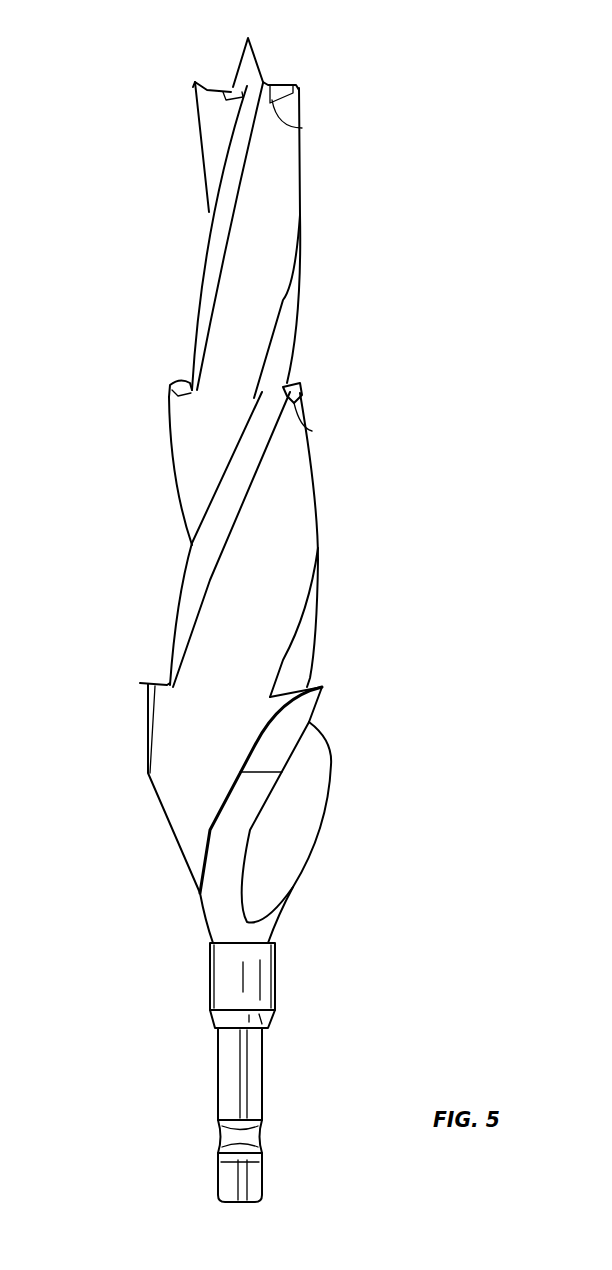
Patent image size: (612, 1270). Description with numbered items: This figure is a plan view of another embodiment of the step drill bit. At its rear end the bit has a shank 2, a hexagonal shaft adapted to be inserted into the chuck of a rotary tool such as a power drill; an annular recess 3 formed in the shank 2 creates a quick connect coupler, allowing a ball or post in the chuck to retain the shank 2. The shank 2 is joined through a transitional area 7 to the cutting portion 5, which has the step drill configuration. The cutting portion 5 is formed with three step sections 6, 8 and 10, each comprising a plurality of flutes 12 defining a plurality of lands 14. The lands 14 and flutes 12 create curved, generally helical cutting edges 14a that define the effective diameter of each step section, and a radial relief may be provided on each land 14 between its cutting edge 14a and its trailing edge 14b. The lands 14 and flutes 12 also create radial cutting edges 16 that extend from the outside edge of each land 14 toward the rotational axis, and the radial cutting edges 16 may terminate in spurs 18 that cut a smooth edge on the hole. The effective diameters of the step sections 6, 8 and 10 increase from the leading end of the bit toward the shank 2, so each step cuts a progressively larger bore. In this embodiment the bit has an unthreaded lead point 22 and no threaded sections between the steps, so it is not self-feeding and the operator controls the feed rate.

The shank 2 is at (289, 1090).
The annular recess 3 is at (257, 1135).
The cutting portion 5 is at (70, 930).
The step section 6 is at (133, 226).
The transitional area 7 is at (275, 1010).
The step section 8 is at (133, 548).
The step section 10 is at (138, 822).
The flute 12 is at (275, 175).
The land 14 is at (203, 123).
The cutting edge 14a is at (236, 195).
The trailing edge 14b is at (200, 255).
The radial cutting edge 16 is at (215, 90).
The spur 18 is at (195, 82).
The lead point 22 is at (257, 55).